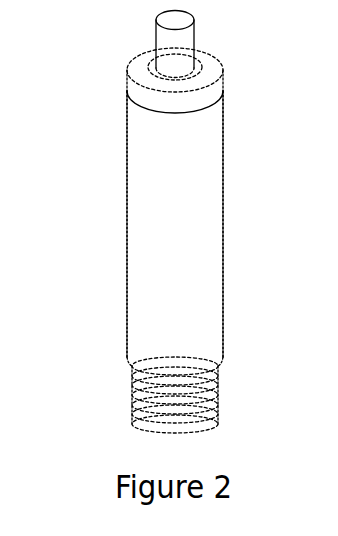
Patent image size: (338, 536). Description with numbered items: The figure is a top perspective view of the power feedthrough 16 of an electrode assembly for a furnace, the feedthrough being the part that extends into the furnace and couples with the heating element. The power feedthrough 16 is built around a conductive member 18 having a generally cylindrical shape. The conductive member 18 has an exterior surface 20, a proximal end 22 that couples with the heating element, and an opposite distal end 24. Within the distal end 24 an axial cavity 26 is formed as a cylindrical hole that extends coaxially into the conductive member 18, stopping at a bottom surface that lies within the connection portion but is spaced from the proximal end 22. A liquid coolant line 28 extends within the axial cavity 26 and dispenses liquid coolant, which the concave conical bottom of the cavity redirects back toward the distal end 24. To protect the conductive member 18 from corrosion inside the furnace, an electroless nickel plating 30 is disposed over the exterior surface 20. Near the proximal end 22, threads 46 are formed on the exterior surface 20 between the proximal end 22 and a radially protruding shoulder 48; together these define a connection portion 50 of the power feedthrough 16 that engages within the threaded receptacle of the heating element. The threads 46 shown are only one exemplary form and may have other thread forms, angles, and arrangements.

The power feedthrough 16 is at (90, 98).
The conductive member 18 is at (135, 212).
The exterior surface 20 is at (153, 315).
The proximal end 22 is at (160, 430).
The distal end 24 is at (210, 70).
The axial cavity 26 is at (155, 63).
The liquid coolant line 28 is at (168, 37).
The electroless nickel plating 30 is at (218, 88).
The threads 46 is at (132, 393).
The radially protruding shoulder 48 is at (190, 372).
The connection portion 50 is at (90, 382).